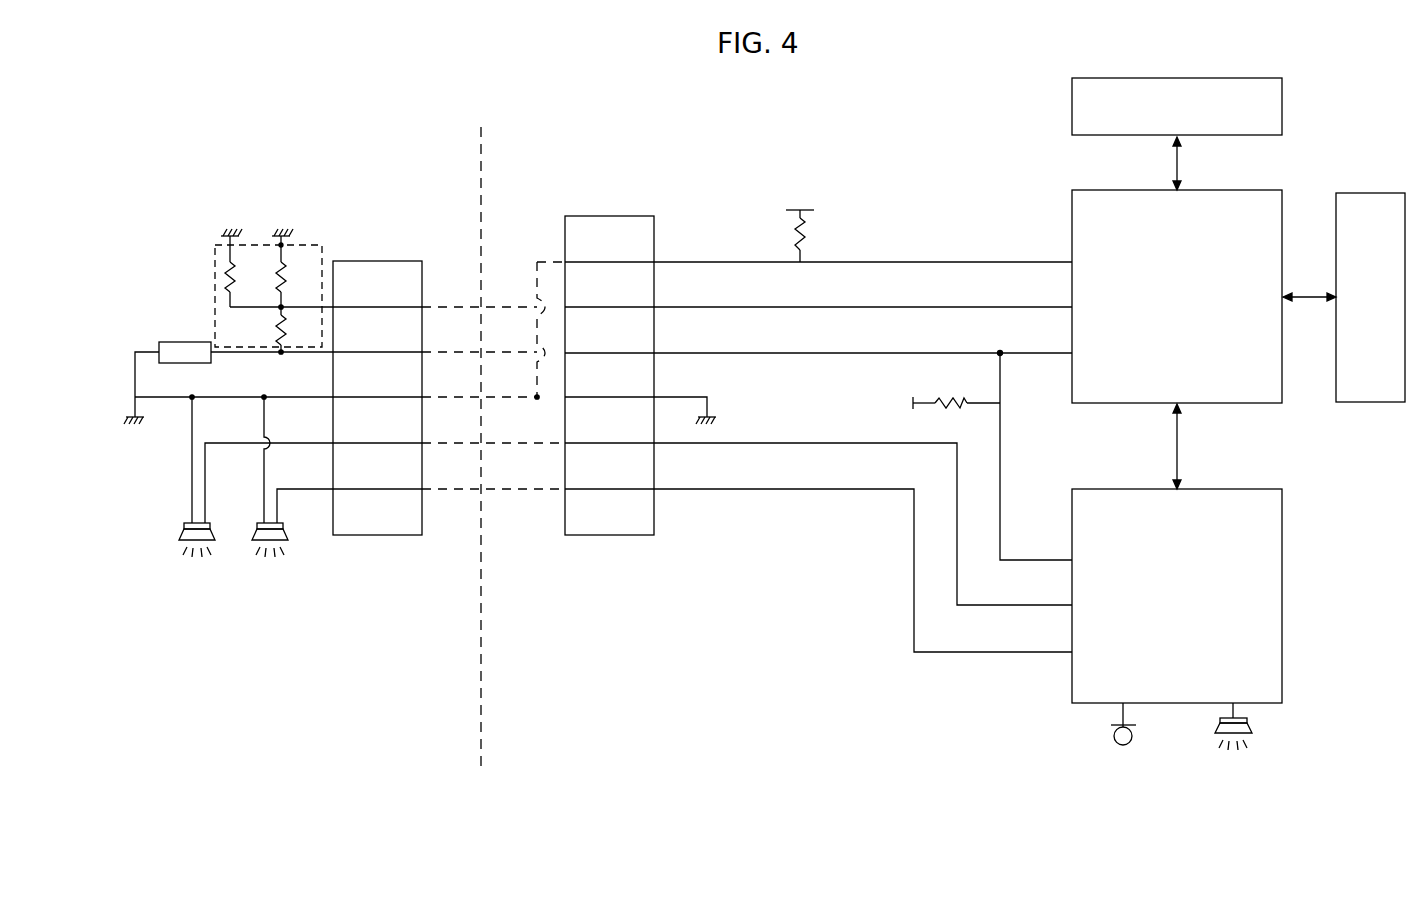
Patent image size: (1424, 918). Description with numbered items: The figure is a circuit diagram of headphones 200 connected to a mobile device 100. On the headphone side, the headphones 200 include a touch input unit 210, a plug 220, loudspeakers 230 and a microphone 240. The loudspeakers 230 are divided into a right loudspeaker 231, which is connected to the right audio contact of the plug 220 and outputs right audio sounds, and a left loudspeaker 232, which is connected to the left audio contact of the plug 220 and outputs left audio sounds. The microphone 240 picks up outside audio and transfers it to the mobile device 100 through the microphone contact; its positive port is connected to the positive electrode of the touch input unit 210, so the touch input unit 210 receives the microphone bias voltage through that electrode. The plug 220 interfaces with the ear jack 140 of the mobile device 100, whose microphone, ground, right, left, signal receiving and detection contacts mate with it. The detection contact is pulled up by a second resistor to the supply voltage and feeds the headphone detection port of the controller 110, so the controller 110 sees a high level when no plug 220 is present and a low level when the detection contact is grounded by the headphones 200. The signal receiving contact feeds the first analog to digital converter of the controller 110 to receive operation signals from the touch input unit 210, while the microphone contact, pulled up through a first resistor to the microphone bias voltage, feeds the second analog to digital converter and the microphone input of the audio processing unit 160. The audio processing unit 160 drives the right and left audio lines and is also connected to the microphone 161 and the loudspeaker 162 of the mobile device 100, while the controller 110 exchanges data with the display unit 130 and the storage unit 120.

The mobile device 100 is at (696, 118).
The controller 110 is at (1270, 190).
The storage unit 120 is at (1360, 193).
The display unit 130 is at (1283, 104).
The ear jack 140 is at (611, 535).
The audio processing unit 160 is at (1228, 489).
The microphone 161 is at (1113, 737).
The loudspeaker 162 is at (1212, 733).
The headphones 200 is at (406, 118).
The touch input unit 210 is at (215, 299).
The plug 220 is at (376, 535).
The loudspeakers 230 is at (240, 645).
The right loudspeaker 231 is at (180, 543).
The left loudspeaker 232 is at (252, 543).
The microphone 240 is at (176, 342).